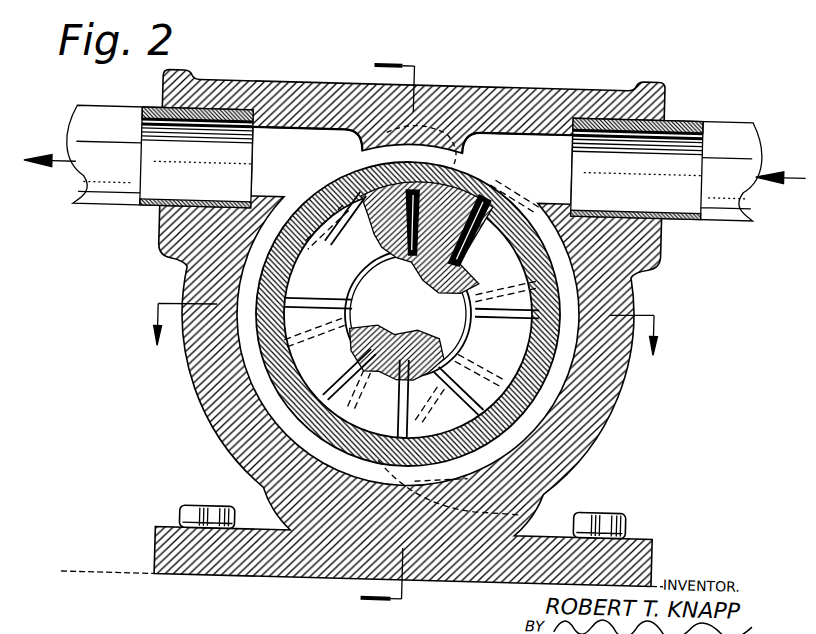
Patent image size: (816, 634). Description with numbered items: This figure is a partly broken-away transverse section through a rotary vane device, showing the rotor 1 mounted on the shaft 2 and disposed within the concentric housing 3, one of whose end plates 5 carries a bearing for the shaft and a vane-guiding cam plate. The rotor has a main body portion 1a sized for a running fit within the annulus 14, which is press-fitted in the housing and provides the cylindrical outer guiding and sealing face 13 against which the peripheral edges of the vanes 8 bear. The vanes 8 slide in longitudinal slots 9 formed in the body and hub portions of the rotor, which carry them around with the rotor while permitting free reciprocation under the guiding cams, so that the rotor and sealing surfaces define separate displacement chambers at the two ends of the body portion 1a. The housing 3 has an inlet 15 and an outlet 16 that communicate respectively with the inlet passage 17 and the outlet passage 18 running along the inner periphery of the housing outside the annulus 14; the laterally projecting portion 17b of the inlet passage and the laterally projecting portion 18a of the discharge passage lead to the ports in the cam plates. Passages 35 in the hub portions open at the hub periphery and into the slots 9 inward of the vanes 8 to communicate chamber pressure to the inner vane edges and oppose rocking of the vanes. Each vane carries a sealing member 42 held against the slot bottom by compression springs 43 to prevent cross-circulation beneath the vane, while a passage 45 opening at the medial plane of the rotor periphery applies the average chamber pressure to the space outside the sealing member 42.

The rotor 1 is at (584, 428).
The main body portion 1a is at (296, 364).
The shaft 2 is at (407, 313).
The housing 3 is at (188, 435).
The end plate 5 is at (404, 331).
The vanes 8 is at (326, 374).
The longitudinal slots 9 is at (340, 356).
The outer guiding and sealing face 13 is at (538, 342).
The annulus 14 is at (538, 275).
The inlet 15 is at (665, 133).
The outlet 16 is at (150, 122).
The inlet passage 17 is at (518, 210).
The laterally projecting portion of inlet passage 17b is at (470, 493).
The outlet passage 18 is at (291, 214).
The laterally projecting portion of discharge passage 18a is at (430, 114).
The passages 35 is at (358, 282).
The sealing member 42 is at (480, 198).
The compression springs 43 is at (490, 218).
The passage 45 is at (412, 302).